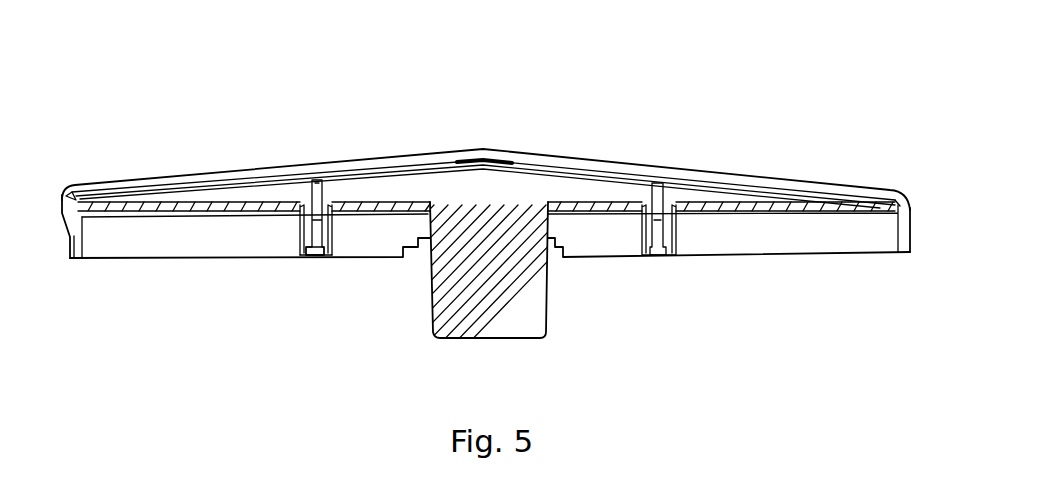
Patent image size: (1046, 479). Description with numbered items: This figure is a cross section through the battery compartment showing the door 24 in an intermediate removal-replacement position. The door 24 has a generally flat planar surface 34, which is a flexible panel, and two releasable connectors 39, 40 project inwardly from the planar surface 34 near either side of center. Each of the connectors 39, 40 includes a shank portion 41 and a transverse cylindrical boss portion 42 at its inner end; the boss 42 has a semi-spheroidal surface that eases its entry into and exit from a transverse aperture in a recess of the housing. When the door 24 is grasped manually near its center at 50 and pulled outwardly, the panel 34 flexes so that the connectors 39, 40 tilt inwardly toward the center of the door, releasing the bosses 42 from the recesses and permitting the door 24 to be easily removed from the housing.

The door 24 is at (561, 165).
The planar surface 34 is at (710, 172).
The releasable connector 39 is at (296, 201).
The releasable connector 40 is at (676, 240).
The shank portion 41 is at (325, 188).
The boss portion 42 is at (312, 258).
The center grasping point 50 is at (483, 157).